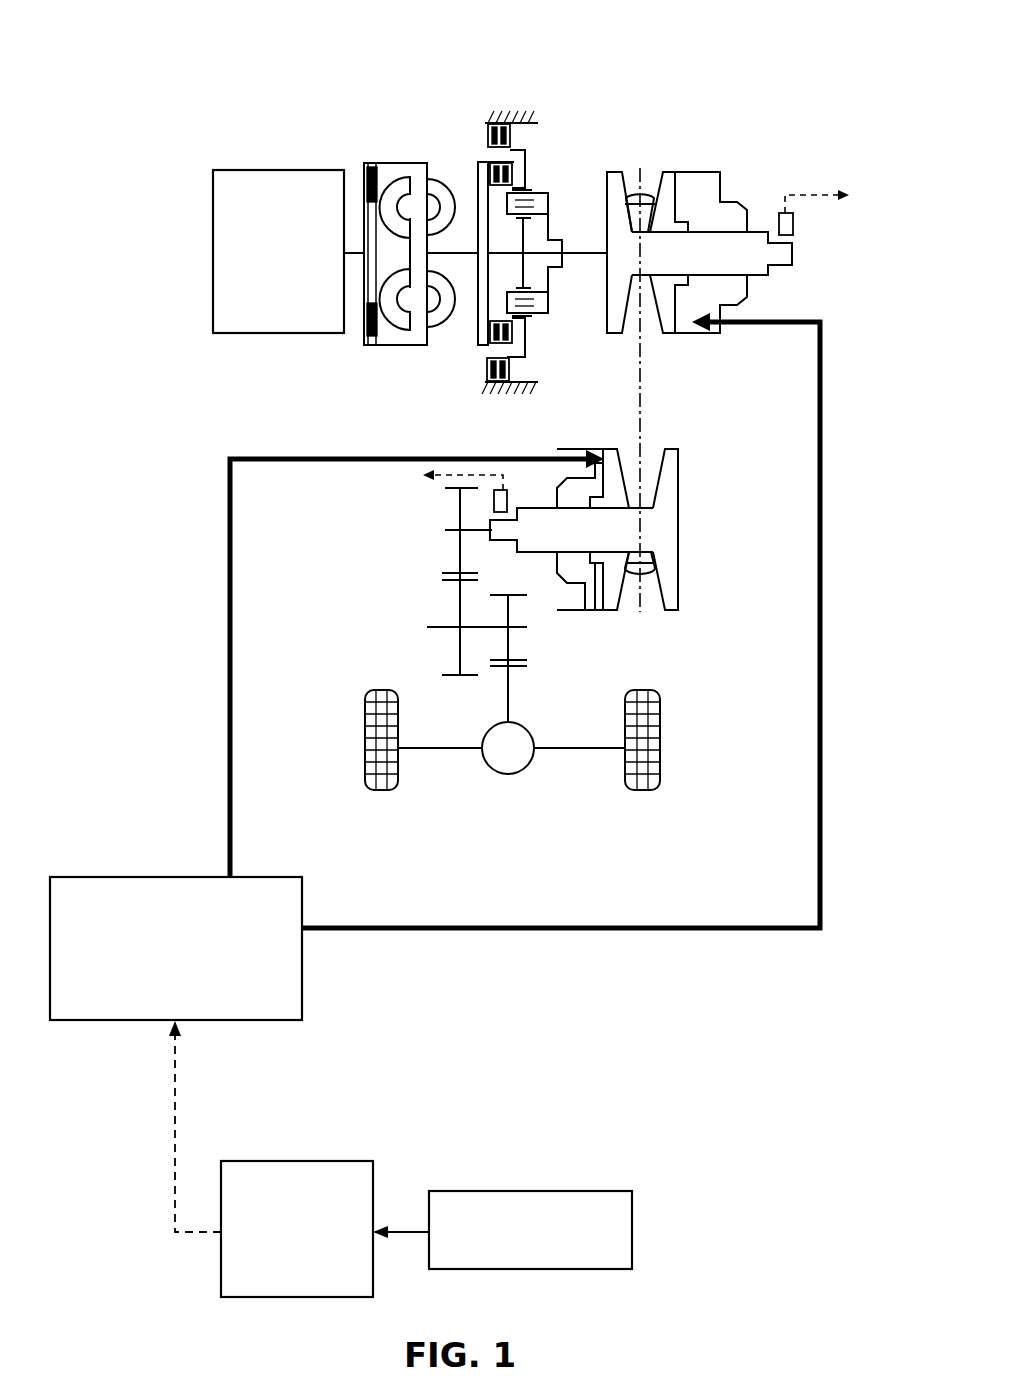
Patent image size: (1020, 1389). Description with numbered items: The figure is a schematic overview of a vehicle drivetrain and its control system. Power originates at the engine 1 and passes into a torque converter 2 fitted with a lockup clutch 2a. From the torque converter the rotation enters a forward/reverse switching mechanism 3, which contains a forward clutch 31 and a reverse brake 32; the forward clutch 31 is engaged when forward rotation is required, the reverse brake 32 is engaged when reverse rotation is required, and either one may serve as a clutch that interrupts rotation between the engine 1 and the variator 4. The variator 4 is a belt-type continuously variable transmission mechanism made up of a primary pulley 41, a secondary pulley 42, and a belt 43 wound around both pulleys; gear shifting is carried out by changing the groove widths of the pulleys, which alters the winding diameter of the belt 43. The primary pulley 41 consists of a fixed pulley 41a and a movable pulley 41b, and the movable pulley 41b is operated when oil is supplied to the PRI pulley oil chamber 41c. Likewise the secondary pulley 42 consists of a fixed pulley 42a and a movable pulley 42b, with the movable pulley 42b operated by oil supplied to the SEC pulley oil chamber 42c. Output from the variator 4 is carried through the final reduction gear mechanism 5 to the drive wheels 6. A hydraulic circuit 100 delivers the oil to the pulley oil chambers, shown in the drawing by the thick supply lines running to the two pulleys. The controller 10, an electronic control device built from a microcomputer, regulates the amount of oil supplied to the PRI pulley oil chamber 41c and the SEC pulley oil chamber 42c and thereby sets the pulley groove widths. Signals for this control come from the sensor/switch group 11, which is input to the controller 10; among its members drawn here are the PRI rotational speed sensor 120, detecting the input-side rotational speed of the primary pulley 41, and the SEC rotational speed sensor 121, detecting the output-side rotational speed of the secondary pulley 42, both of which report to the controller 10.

The engine 1 is at (263, 170).
The torque converter 2 is at (408, 206).
The lockup clutch 2a is at (370, 166).
The forward/reverse switching mechanism 3 is at (523, 200).
The forward clutch 31 is at (488, 163).
The reverse brake 32 is at (513, 120).
The variator 4 is at (639, 97).
The primary pulley 41 is at (684, 207).
The fixed pulley 41a is at (613, 170).
The movable pulley 41b is at (672, 170).
The PRI pulley oil chamber 41c is at (693, 190).
The secondary pulley 42 is at (623, 542).
The fixed pulley 42a is at (680, 465).
The movable pulley 42b is at (608, 612).
The SEC pulley oil chamber 42c is at (585, 612).
The belt 43 is at (646, 576).
The final reduction gear mechanism 5 is at (408, 595).
The drive wheels 6 is at (365, 755).
The controller 10 is at (313, 1161).
The sensor/switch group 11 is at (632, 1196).
The hydraulic circuit 100 is at (173, 877).
The PRI rotational speed sensor 120 is at (795, 225).
The SEC rotational speed sensor 121 is at (505, 490).